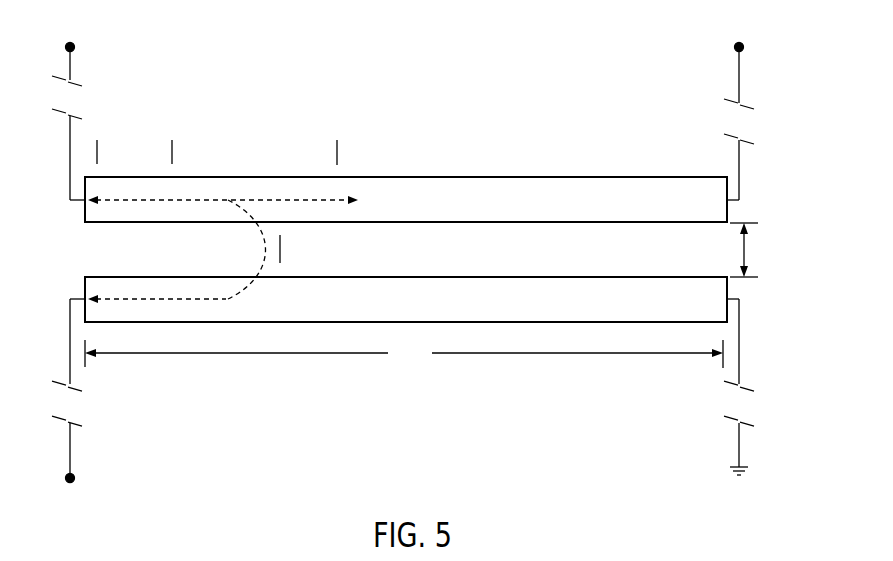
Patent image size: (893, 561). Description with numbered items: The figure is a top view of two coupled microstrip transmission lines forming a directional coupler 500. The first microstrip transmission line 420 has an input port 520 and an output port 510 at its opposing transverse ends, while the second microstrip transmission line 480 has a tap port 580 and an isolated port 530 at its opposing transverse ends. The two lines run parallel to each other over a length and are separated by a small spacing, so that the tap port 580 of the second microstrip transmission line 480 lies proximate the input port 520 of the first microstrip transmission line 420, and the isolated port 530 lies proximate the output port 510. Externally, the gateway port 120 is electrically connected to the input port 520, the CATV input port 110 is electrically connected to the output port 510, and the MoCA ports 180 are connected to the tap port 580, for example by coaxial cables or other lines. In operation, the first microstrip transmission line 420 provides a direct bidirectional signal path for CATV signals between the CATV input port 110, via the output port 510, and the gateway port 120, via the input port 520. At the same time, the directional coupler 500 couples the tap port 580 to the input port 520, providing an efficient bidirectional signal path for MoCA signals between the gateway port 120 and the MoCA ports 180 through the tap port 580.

The CATV input port 110 is at (745, 47).
The gateway port 120 is at (65, 47).
The MoCA ports 180 is at (67, 480).
The first microstrip transmission line 420 is at (422, 212).
The second microstrip transmission line 480 is at (422, 312).
The directional coupler 500 is at (799, 107).
The output port 510 is at (742, 201).
The input port 520 is at (64, 201).
The isolated port 530 is at (742, 300).
The tap port 580 is at (66, 300).